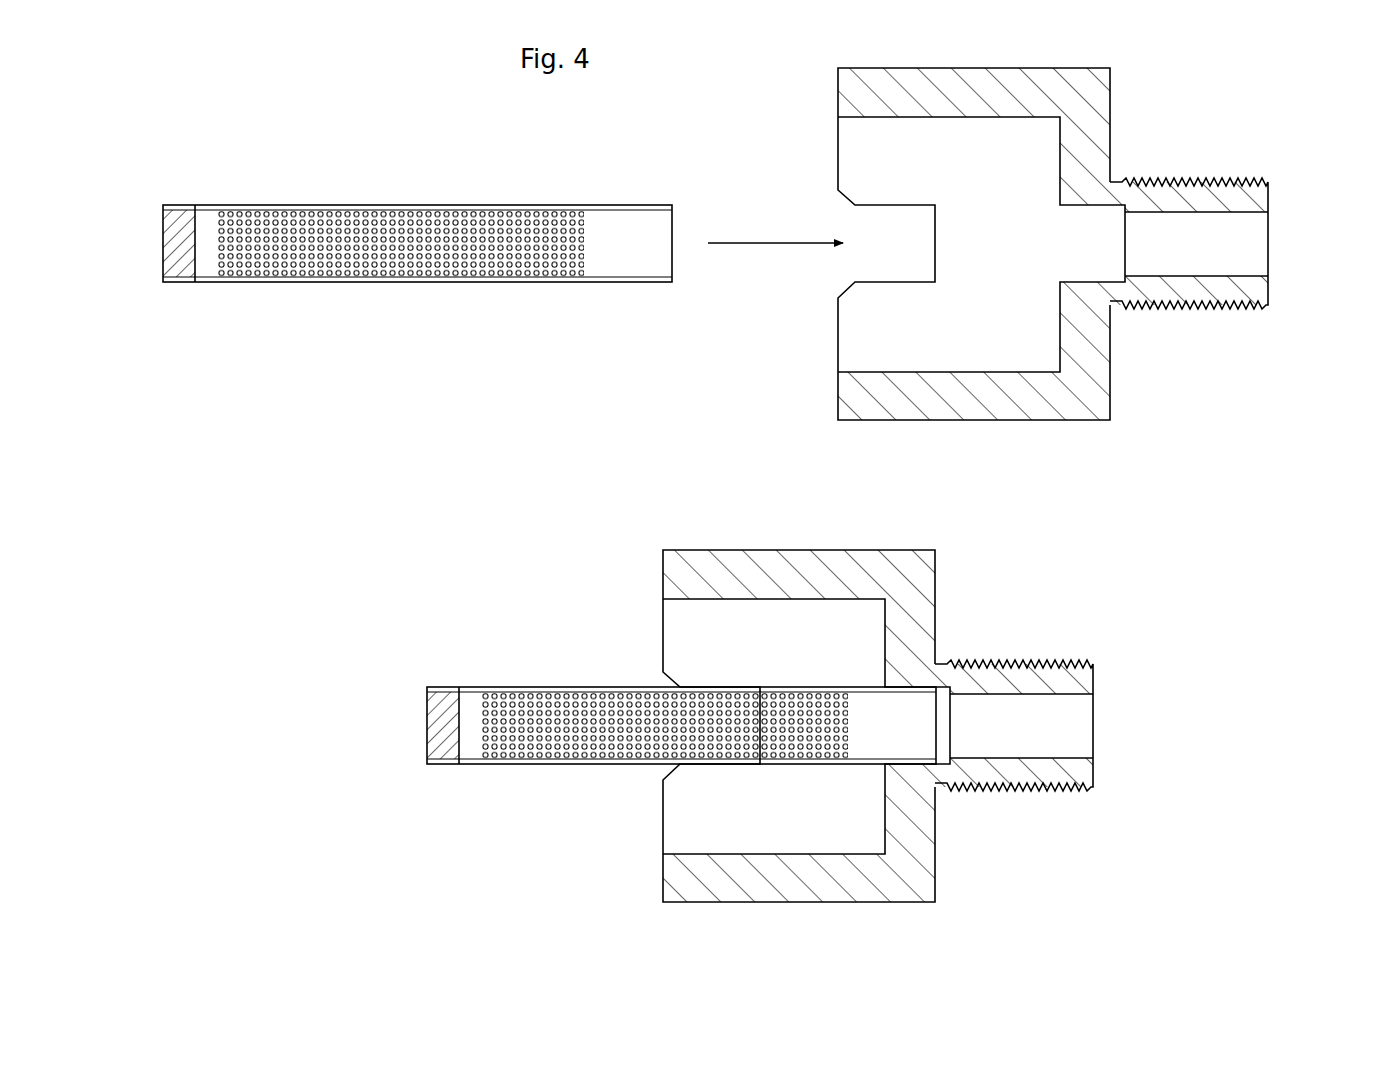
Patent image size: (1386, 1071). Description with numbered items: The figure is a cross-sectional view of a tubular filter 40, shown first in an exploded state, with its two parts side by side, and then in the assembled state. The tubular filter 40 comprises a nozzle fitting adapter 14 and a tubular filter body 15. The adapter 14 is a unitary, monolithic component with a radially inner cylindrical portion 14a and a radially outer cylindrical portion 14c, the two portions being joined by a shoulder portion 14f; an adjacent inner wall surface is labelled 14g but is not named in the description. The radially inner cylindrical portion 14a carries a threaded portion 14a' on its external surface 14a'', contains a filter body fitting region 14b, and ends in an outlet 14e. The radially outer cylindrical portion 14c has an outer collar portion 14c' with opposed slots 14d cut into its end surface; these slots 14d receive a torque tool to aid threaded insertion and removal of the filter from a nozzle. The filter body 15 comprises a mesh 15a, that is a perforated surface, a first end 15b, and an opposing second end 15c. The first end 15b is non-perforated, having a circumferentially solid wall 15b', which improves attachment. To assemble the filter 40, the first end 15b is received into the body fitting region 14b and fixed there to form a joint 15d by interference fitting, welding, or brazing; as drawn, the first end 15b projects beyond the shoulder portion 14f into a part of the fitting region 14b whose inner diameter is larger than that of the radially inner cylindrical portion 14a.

The nozzle fitting adapter 14 is at (795, 82).
The radially inner cylindrical portion 14a is at (1157, 479).
The threaded portion 14a' is at (1124, 362).
The external surface 14a'' is at (1179, 376).
The filter body fitting region 14b is at (1095, 258).
The radially outer cylindrical portion 14c is at (840, 637).
The outer collar portion 14c' is at (861, 661).
The slots 14d is at (873, 214).
The outlet 14e is at (1260, 240).
The shoulder portion 14f is at (1086, 140).
The inner wall surface 14g is at (1060, 150).
The tubular filter body 15 is at (211, 172).
The mesh 15a is at (349, 245).
The first end 15b is at (789, 445).
The circumferentially solid wall 15b' is at (829, 549).
The second end 15c is at (183, 258).
The joint 15d is at (905, 765).
The tubular filter 40 is at (496, 610).